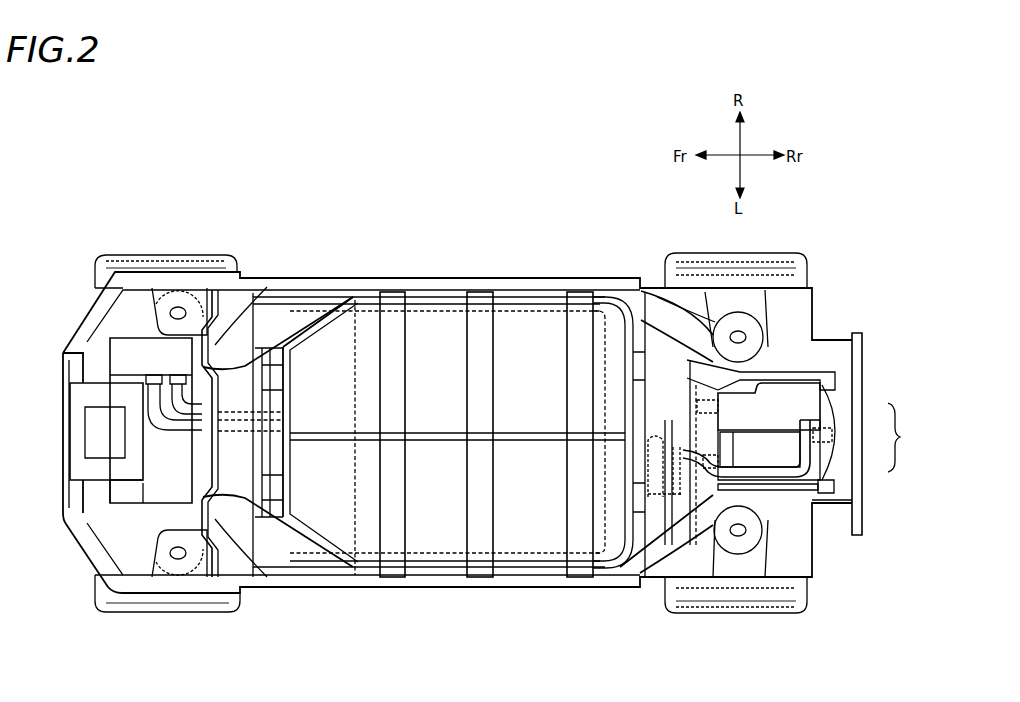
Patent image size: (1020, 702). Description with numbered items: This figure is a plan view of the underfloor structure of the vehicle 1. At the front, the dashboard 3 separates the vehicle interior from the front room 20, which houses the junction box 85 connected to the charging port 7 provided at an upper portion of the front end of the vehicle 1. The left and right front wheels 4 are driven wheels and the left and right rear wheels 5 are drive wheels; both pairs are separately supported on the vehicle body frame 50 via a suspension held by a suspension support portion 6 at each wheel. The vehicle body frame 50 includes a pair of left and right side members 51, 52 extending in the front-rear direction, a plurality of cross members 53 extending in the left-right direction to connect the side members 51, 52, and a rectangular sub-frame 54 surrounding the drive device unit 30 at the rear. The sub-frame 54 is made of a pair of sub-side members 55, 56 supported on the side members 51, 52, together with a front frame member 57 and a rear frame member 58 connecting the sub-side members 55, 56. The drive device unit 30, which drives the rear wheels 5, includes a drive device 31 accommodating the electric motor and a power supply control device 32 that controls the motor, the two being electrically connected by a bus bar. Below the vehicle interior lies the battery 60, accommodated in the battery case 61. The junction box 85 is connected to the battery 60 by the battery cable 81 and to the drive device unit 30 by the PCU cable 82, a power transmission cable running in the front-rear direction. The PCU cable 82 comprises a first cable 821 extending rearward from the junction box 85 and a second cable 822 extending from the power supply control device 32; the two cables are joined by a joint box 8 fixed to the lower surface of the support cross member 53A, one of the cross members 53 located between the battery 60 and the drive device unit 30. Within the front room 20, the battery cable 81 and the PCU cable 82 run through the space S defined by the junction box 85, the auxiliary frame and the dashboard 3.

The vehicle 1 is at (495, 216).
The dashboard 3 is at (235, 393).
The front wheels 4 is at (190, 254).
The rear wheels 5 is at (763, 254).
The suspension support portion 6 is at (147, 312).
The charging port 7 is at (88, 433).
The joint box 8 is at (668, 505).
The front room 20 is at (97, 495).
The drive device unit 30 is at (902, 437).
The drive device 31 is at (838, 457).
The power supply control device (PCU) 32 is at (838, 397).
The vehicle body frame 50 is at (548, 279).
The side member 51 is at (505, 282).
The side member 52 is at (520, 587).
The cross members 53 is at (283, 345).
The support cross member 53A is at (672, 500).
The sub-frame 54 is at (836, 394).
The sub-side member 55 is at (834, 380).
The sub-side member 56 is at (822, 487).
The front frame member 57 is at (703, 482).
The rear frame member 58 is at (836, 478).
The battery 60 is at (353, 330).
The battery case 61 is at (432, 300).
The battery cable 81 is at (158, 430).
The PCU cable 82 is at (195, 435).
The junction box 85 is at (140, 487).
The first cable 821 is at (530, 432).
The second cable 822 is at (822, 494).
The space S is at (200, 460).